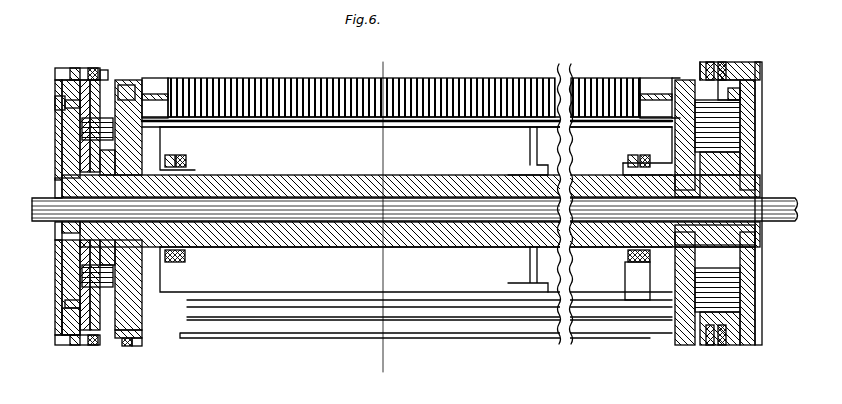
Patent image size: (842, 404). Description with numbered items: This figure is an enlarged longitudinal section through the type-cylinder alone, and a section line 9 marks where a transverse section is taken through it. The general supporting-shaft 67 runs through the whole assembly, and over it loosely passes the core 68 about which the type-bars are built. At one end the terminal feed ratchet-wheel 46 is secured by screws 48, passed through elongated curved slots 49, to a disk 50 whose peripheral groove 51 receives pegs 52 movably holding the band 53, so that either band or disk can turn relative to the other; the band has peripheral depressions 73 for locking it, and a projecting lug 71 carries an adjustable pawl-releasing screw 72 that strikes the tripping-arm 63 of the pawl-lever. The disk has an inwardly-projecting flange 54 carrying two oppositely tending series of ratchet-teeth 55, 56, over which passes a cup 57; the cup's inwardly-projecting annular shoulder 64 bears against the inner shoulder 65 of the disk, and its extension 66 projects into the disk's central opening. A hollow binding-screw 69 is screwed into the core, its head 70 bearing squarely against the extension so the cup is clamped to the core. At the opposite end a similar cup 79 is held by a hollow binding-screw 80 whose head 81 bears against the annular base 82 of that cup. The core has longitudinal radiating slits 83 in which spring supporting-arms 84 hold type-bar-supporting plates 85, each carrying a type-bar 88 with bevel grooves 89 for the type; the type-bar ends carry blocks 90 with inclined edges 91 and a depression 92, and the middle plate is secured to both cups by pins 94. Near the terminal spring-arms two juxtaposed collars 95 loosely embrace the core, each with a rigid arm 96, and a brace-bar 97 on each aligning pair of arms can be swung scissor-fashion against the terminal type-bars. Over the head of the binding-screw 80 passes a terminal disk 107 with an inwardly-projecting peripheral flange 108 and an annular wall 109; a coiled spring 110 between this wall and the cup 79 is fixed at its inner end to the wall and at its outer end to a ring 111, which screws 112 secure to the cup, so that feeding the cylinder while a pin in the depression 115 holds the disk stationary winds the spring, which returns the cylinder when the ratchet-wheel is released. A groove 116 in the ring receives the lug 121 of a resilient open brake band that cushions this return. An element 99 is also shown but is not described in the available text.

The section line 9 is at (377, 214).
The terminal feed ratchet-wheel 46 is at (58, 120).
The screws 48 is at (65, 104).
The elongated curved slots 49 is at (60, 100).
The disk 50 is at (70, 140).
The peripheral groove 51 is at (80, 328).
The pegs 52 is at (75, 68).
The band 53 is at (72, 68).
The inwardly-projecting flange 54 is at (95, 95).
The series of ratchet-teeth 55 is at (125, 338).
The series of ratchet-teeth 56 is at (126, 85).
The cup 57 is at (135, 95).
The tripping-arm 63 is at (108, 72).
The inwardly-projecting annular shoulder 64 is at (98, 202).
The inner shoulder 65 is at (62, 180).
The extension 66 is at (62, 228).
The shaft 67 is at (250, 240).
The core 68 is at (305, 243).
The hollow binding-screw 69 is at (180, 190).
The head of binding-screw 70 is at (60, 198).
The projecting lug 71 is at (126, 348).
The pawl-releasing screw 72 is at (136, 348).
The peripheral depressions 73 is at (93, 68).
The cup 79 is at (672, 142).
The hollow binding-screw 80 is at (630, 256).
The head of binding-screw 81 is at (755, 236).
The annular base 82 is at (755, 248).
The longitudinal radiating slits 83 is at (437, 172).
The spring supporting-arms 84 is at (165, 140).
The type-bar-supporting plate 85 is at (316, 128).
The type-bar 88 is at (497, 78).
The bevel grooves 89 is at (437, 82).
The blocks 90 is at (160, 88).
The inclined edges 91 is at (655, 82).
The depression 92 is at (165, 97).
The pins 94 is at (182, 156).
The collars 95 is at (187, 160).
The rigid arm 96 is at (165, 290).
The brace-bar 97 is at (247, 338).
The rim 99 is at (660, 76).
The terminal disk 107 is at (760, 62).
The inwardly-projecting peripheral flange 108 is at (742, 62).
The inwardly-projecting annular wall 109 is at (742, 160).
The coiled spring 110 is at (742, 126).
The ring 111 is at (708, 64).
The screws 112 is at (722, 64).
The depression 115 is at (760, 60).
The groove 116 is at (740, 94).
The inwardly-projecting lug 121 is at (742, 86).